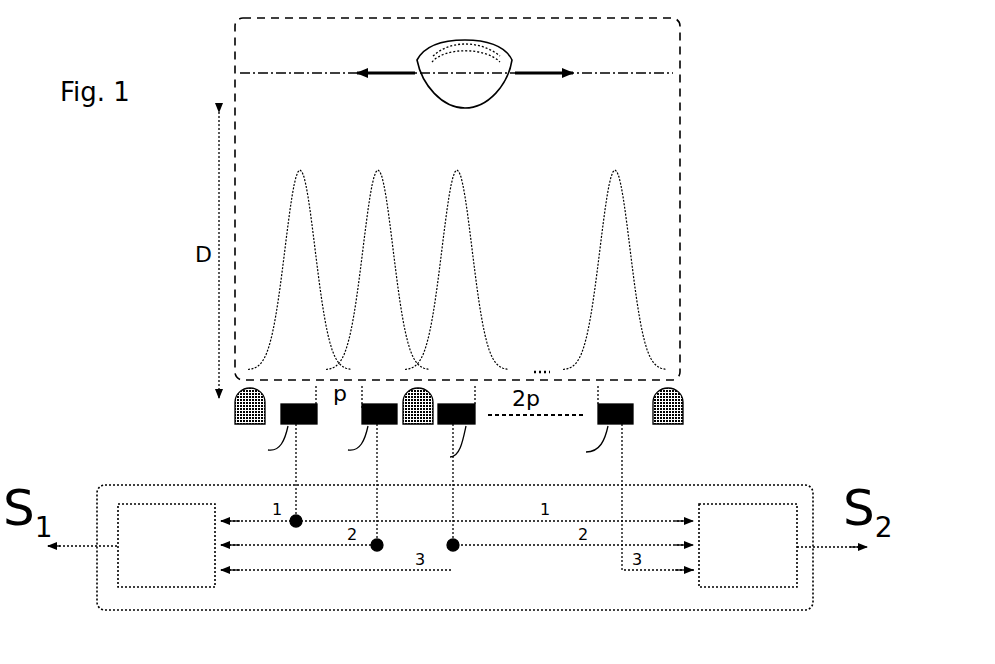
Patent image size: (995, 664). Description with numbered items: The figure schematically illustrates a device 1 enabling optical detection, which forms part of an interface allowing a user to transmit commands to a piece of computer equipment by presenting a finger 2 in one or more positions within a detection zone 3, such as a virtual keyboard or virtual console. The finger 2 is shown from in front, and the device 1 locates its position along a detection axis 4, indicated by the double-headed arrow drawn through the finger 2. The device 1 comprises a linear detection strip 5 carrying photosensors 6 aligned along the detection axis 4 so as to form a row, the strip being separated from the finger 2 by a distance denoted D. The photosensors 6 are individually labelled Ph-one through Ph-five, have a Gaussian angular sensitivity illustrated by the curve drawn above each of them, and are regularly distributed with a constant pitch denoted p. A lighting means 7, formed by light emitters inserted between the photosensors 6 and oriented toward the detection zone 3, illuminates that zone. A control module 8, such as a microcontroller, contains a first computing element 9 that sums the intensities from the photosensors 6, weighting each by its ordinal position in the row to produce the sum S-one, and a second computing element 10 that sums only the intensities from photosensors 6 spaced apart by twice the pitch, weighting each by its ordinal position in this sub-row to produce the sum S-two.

The device 1 is at (740, 209).
The finger 2 is at (505, 62).
The detection zone 3 is at (663, 100).
The detection axis 4 is at (323, 78).
The linear detection strip 5 is at (200, 413).
The photosensors 6 is at (608, 392).
The lighting means 7 is at (233, 425).
The control module 8 is at (633, 597).
The first computing element 9 is at (158, 505).
The second computing element 10 is at (752, 505).